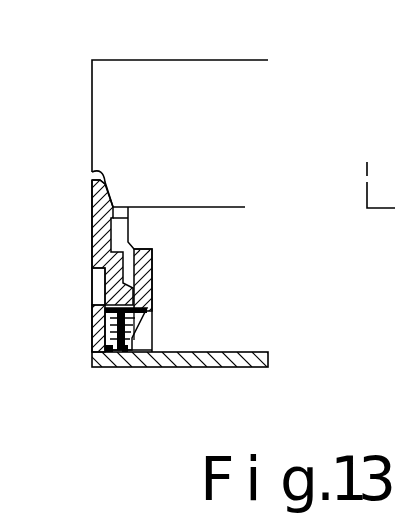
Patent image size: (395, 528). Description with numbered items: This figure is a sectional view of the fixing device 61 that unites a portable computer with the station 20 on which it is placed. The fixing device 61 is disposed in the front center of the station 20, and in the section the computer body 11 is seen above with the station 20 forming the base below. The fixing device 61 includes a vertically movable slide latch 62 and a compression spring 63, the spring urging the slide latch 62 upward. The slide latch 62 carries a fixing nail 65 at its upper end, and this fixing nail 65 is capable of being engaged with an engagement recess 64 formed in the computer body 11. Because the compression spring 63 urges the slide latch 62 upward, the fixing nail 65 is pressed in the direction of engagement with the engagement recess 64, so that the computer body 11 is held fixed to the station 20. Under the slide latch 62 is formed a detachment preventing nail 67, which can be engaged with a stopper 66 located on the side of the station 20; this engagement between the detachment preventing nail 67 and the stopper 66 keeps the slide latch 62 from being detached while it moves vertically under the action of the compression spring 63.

The computer body 11 is at (205, 76).
The station 20 is at (243, 357).
The fixing device 61 is at (70, 244).
The slide latch 62 is at (84, 254).
The compression spring 63 is at (125, 352).
The engagement recess 64 is at (91, 192).
The fixing nail 65 is at (97, 212).
The stopper 66 is at (152, 277).
The detachment preventing nail 67 is at (151, 314).